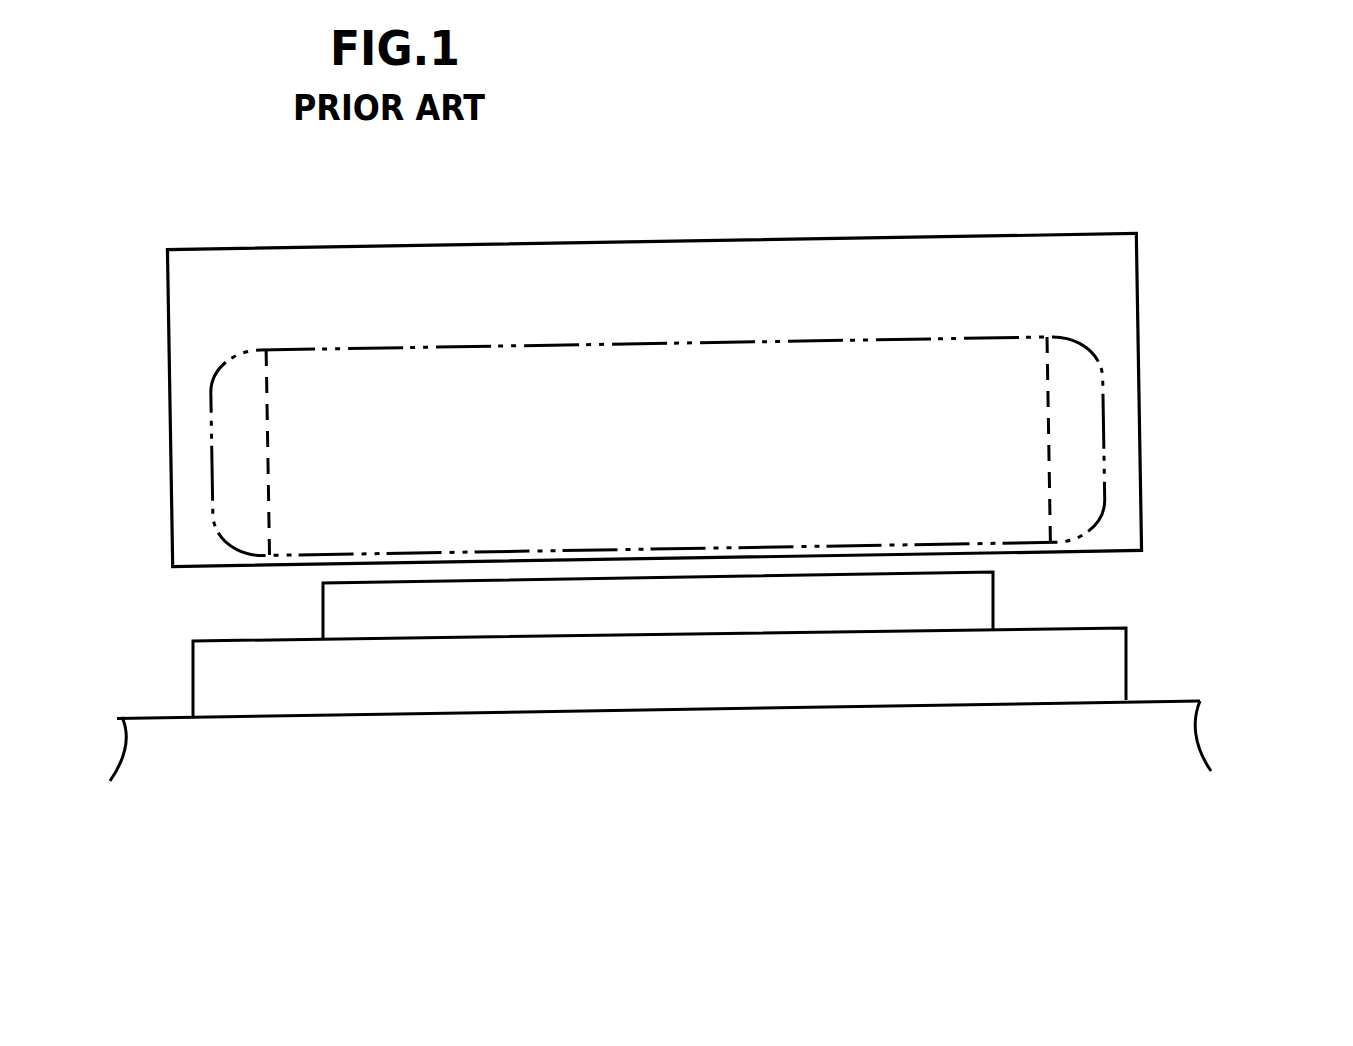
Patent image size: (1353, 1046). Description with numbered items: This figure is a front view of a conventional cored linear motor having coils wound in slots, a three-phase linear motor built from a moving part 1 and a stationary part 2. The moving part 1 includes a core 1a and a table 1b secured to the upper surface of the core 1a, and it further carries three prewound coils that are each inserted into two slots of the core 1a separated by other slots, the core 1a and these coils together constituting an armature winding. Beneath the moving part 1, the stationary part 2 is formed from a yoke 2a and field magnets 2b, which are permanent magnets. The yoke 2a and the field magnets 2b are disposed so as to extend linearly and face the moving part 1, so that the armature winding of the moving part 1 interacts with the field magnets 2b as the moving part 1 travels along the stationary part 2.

The moving part 1 is at (846, 200).
The core 1a is at (264, 463).
The table 1b is at (1139, 274).
The stationary part 2 is at (1198, 726).
The yoke 2a is at (1003, 725).
The field magnets 2b is at (528, 628).